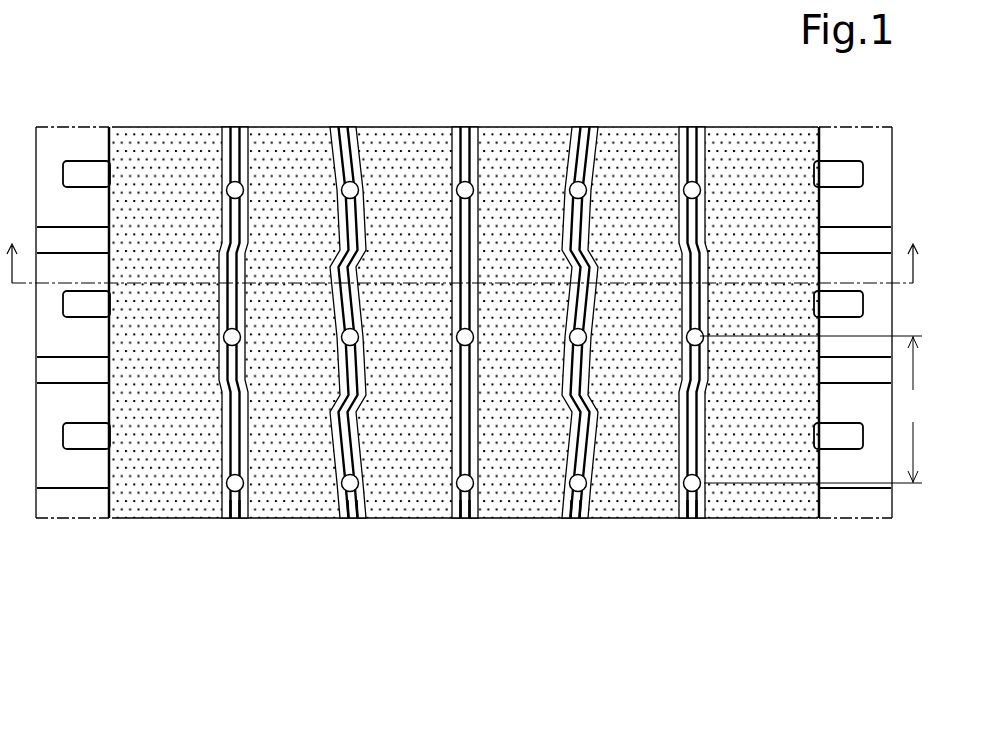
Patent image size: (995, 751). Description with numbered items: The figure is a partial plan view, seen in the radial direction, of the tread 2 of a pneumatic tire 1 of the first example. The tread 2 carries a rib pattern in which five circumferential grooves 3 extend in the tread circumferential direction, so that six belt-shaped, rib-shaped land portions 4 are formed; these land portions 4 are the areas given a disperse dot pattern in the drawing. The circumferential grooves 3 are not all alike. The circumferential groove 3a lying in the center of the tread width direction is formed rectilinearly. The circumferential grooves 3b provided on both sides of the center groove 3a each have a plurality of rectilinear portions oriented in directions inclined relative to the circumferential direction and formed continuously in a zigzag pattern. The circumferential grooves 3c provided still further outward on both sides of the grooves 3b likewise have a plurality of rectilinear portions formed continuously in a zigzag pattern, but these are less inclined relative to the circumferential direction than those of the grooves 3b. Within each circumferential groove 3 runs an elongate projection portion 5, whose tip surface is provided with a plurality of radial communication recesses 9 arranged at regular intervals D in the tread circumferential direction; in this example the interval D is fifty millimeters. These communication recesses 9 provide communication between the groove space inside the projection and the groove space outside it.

The pneumatic tire 1 is at (85, 104).
The tread 2 is at (402, 118).
The circumferential grooves 3 is at (459, 288).
The circumferential groove in the center 3a is at (460, 124).
The circumferential grooves on both sides of the center groove 3b is at (339, 124).
The outer circumferential grooves 3c is at (230, 124).
The land portions 4 is at (783, 593).
The elongate projection portion 5 is at (463, 545).
The communication recesses 9 is at (461, 332).